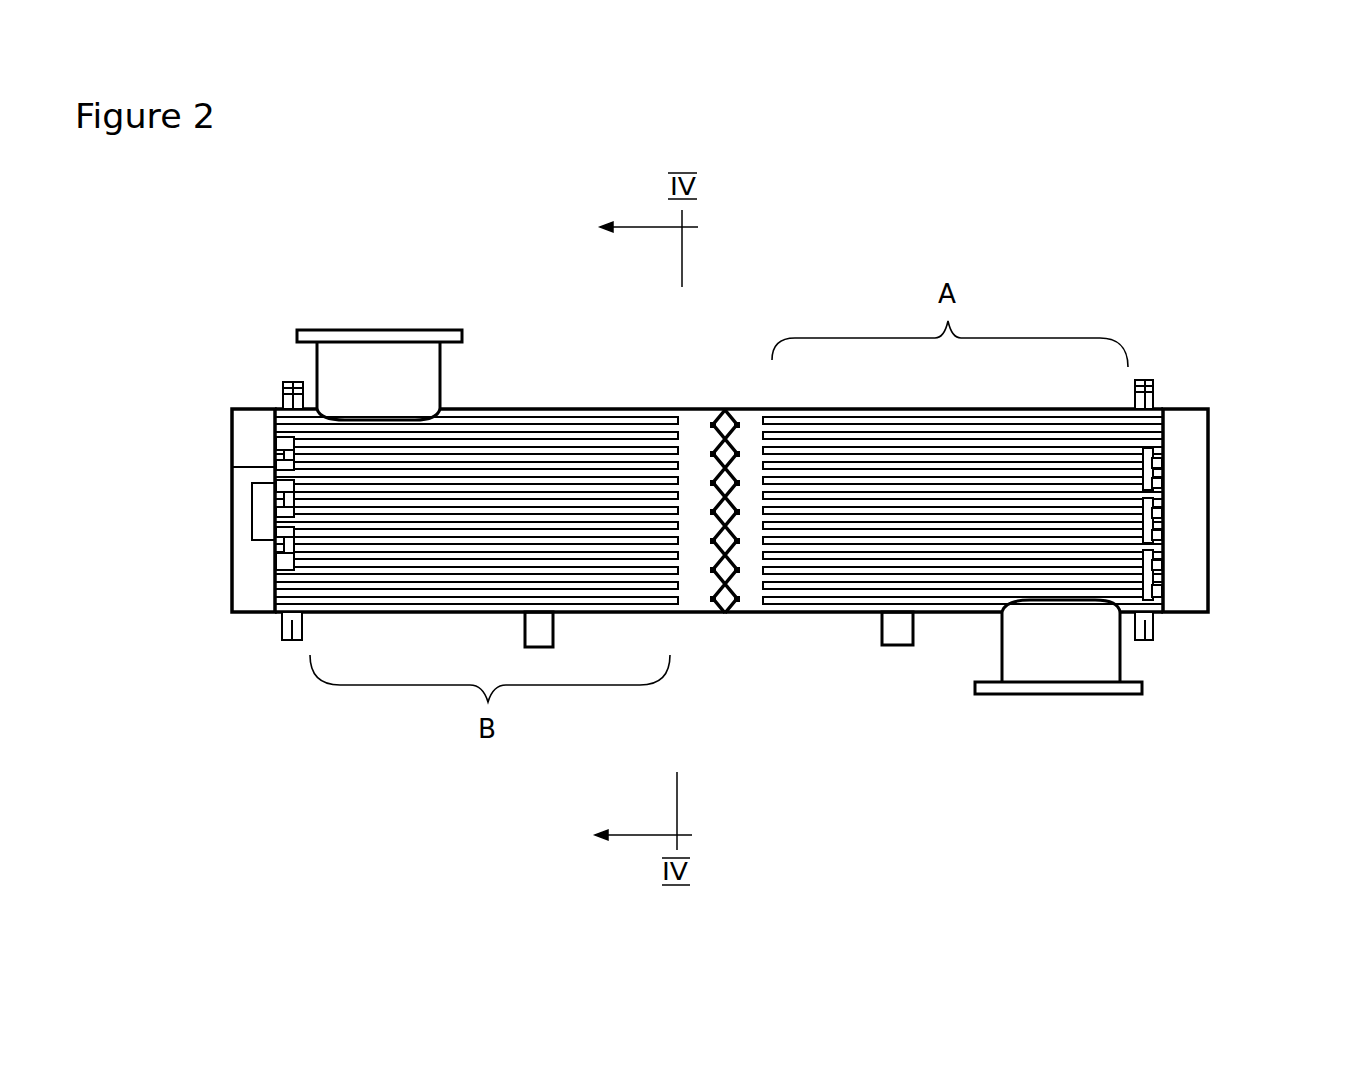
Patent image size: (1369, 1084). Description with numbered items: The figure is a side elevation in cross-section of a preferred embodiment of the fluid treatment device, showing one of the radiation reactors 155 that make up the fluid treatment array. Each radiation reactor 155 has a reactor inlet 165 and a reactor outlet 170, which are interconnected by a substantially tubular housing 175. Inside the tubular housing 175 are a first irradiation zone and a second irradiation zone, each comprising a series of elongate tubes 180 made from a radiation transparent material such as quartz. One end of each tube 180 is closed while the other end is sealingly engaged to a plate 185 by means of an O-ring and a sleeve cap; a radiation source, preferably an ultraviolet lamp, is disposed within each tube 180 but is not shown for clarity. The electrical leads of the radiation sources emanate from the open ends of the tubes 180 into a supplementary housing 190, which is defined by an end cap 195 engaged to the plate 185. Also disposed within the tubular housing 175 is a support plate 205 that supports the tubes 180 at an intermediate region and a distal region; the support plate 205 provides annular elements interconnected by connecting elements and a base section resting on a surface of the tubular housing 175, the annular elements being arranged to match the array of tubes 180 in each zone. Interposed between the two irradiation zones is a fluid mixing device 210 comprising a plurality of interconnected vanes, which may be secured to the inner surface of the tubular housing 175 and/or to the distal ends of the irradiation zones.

The radiation reactor 155 is at (768, 316).
The reactor inlet 165 is at (1000, 660).
The reactor outlet 170 is at (330, 372).
The tubular housing 175 is at (693, 615).
The elongate tube 180 is at (610, 493).
The plate 185 is at (297, 647).
The supplementary housing 190 is at (248, 593).
The end cap 195 is at (232, 522).
The support plate 205 is at (498, 480).
The fluid mixing device 210 is at (718, 613).